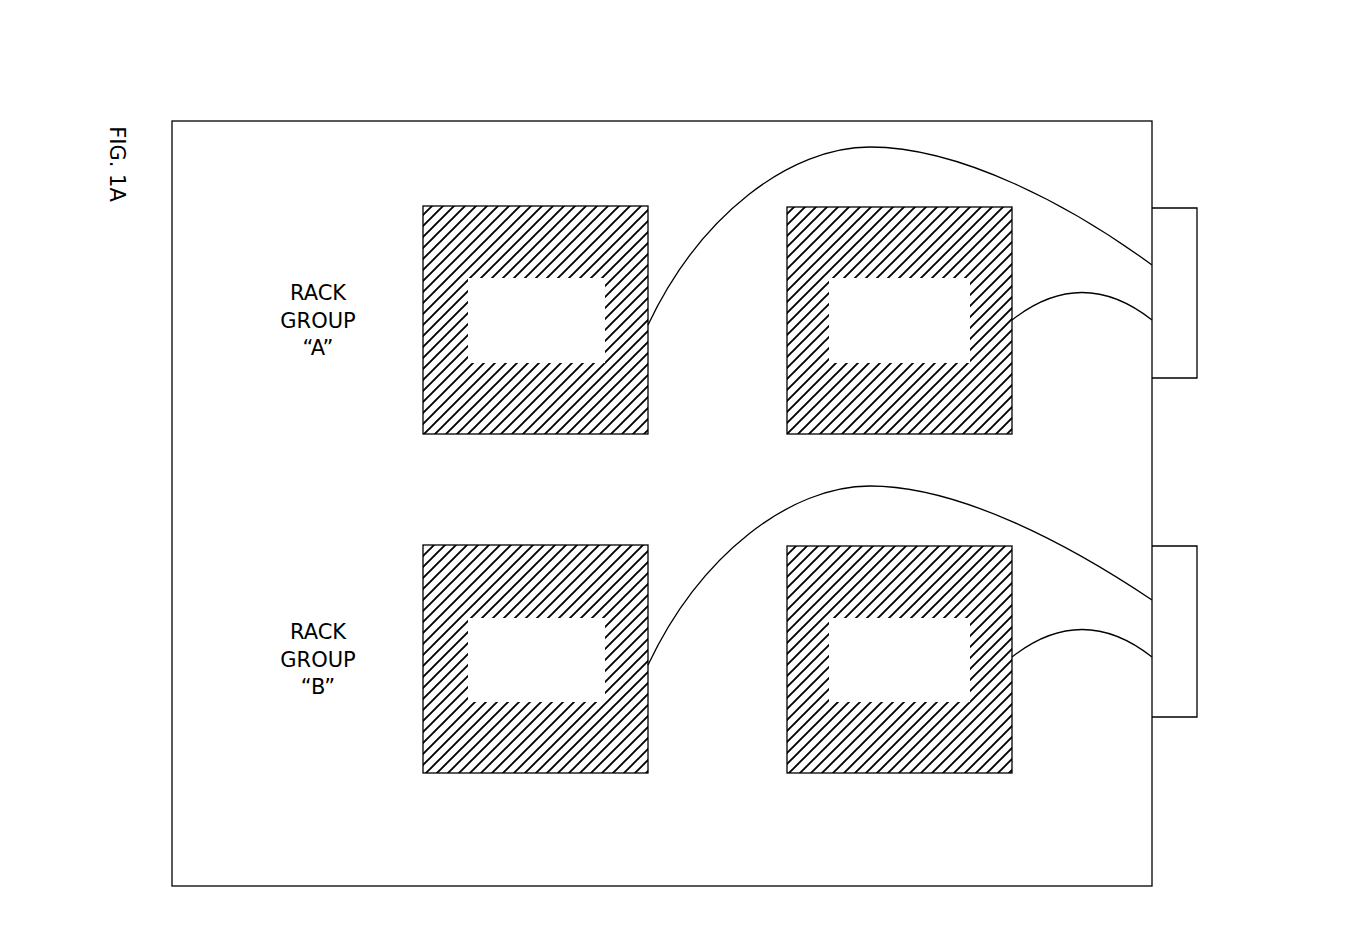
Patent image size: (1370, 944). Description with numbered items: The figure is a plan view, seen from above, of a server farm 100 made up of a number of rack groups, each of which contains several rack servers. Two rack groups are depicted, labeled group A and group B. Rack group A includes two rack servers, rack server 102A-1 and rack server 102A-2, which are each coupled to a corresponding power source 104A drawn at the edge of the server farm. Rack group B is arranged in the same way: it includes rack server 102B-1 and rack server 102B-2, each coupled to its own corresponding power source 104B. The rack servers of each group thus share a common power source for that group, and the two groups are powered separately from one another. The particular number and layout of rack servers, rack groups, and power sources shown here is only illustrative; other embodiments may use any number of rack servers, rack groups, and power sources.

The server farm 100 is at (1208, 120).
The rack server 102A-1 is at (535, 320).
The rack server 102A-2 is at (899, 320).
The rack server 102B-1 is at (535, 659).
The rack server 102B-2 is at (899, 659).
The power source 104A is at (1197, 292).
The power source 104B is at (1197, 627).